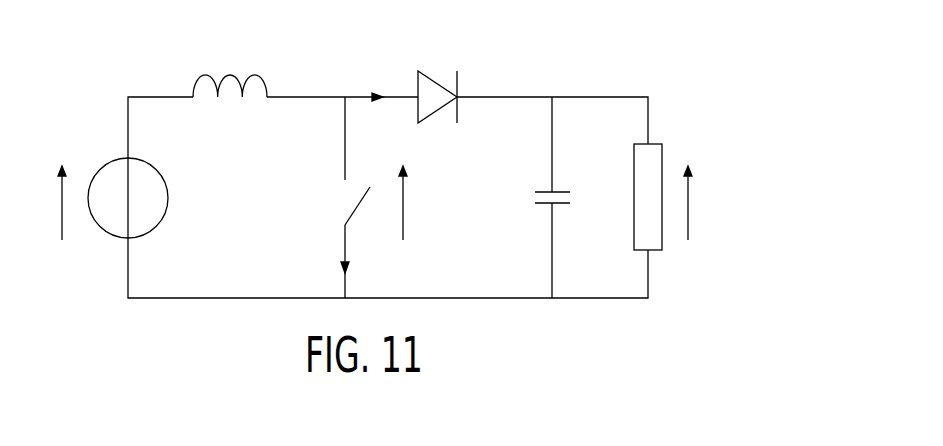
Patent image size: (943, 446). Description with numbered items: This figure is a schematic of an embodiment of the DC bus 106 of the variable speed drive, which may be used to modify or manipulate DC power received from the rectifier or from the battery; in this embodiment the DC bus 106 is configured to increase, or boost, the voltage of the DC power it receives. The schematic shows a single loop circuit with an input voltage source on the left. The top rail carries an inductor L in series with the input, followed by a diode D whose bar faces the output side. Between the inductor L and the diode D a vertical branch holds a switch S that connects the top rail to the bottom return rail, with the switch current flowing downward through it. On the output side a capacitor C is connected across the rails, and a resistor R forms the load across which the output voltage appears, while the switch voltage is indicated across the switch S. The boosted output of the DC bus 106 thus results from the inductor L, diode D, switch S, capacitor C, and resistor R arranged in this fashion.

The DC bus 106 is at (378, 160).
The inductor L is at (230, 103).
The diode D is at (437, 112).
The switch S is at (345, 197).
The capacitor C is at (539, 197).
The load resistor R is at (636, 197).